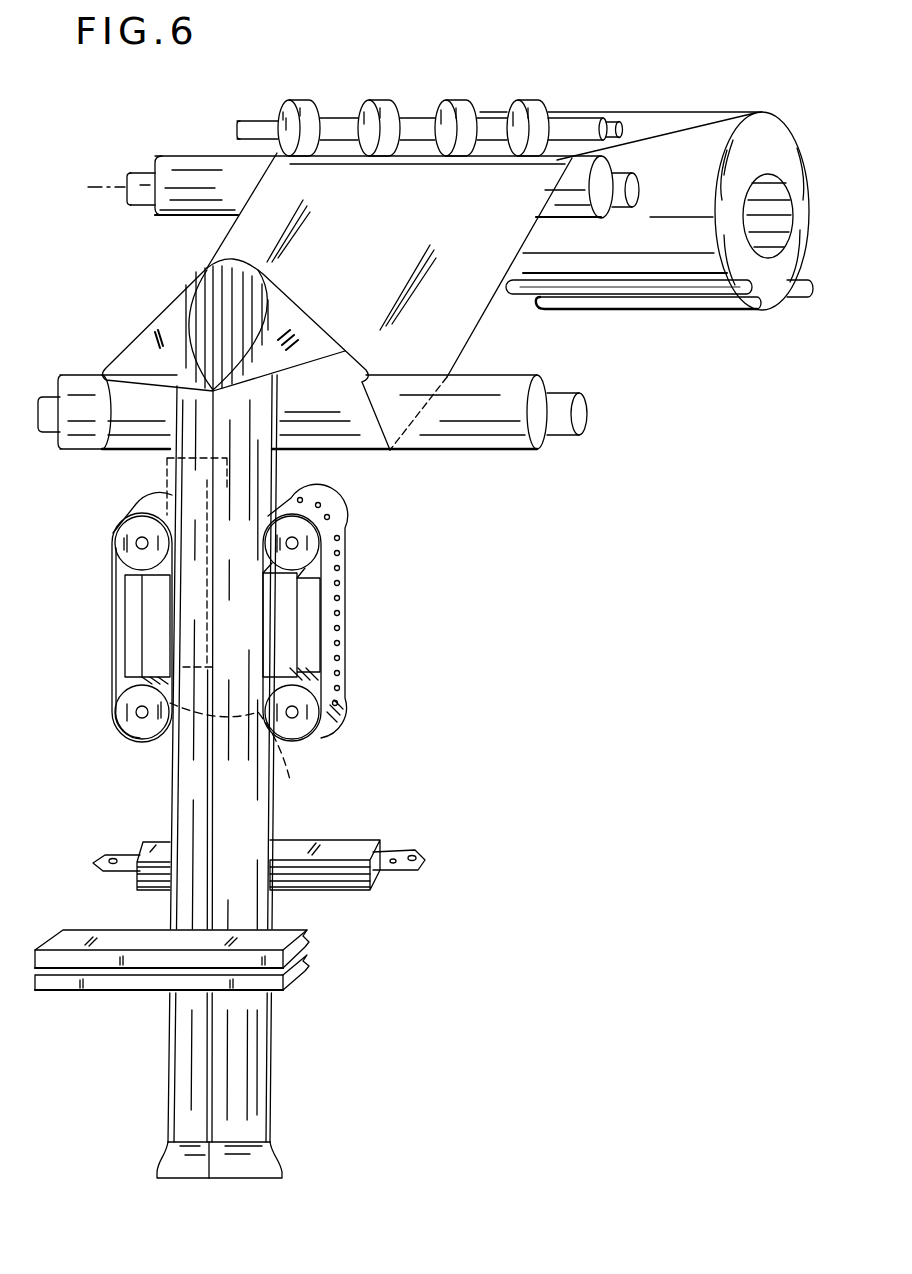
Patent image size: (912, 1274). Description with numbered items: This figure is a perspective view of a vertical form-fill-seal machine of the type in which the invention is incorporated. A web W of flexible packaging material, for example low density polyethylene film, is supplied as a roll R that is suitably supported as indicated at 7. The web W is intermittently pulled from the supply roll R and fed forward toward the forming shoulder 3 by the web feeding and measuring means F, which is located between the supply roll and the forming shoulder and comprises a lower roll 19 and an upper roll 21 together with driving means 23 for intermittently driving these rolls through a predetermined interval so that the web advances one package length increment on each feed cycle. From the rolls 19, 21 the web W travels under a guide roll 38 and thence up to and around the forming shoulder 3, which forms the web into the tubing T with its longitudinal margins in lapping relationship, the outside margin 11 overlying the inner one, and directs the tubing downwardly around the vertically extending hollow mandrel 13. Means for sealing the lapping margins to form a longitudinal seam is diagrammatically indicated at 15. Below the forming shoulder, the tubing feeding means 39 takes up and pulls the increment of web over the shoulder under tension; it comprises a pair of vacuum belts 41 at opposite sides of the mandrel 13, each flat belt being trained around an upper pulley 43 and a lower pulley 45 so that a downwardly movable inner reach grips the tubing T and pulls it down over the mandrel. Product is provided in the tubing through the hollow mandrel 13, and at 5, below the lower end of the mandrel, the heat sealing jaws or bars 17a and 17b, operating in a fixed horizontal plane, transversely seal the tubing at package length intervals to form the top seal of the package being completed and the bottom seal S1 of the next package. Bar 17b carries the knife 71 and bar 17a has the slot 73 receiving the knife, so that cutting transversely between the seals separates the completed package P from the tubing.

The forming shoulder 3 is at (112, 356).
The transverse sealing location 5 is at (94, 897).
The roll support 7 is at (747, 306).
The longitudinal margin 11 is at (203, 437).
The hollow mandrel 13 is at (276, 770).
The longitudinal sealing means 15 is at (163, 480).
The sealing jaw or bar 17a is at (108, 995).
The sealing jaw or bar 17b is at (360, 847).
The lower roll 19 is at (217, 218).
The upper roll 21 is at (282, 113).
The driving means 23 is at (118, 192).
The guide roll 38 is at (546, 450).
The tubing feeding means 39 is at (114, 662).
The vacuum belt 41 is at (343, 617).
The upper pulley 43 is at (133, 530).
The lower pulley 45 is at (133, 732).
The knife 71 is at (427, 861).
The slot 73 is at (300, 967).
The web feeding and measuring means F is at (386, 97).
The supply roll R is at (757, 133).
The web W is at (448, 341).
The tubing T is at (173, 773).
The completed package P is at (272, 1078).
The bottom seal S1 is at (268, 1160).